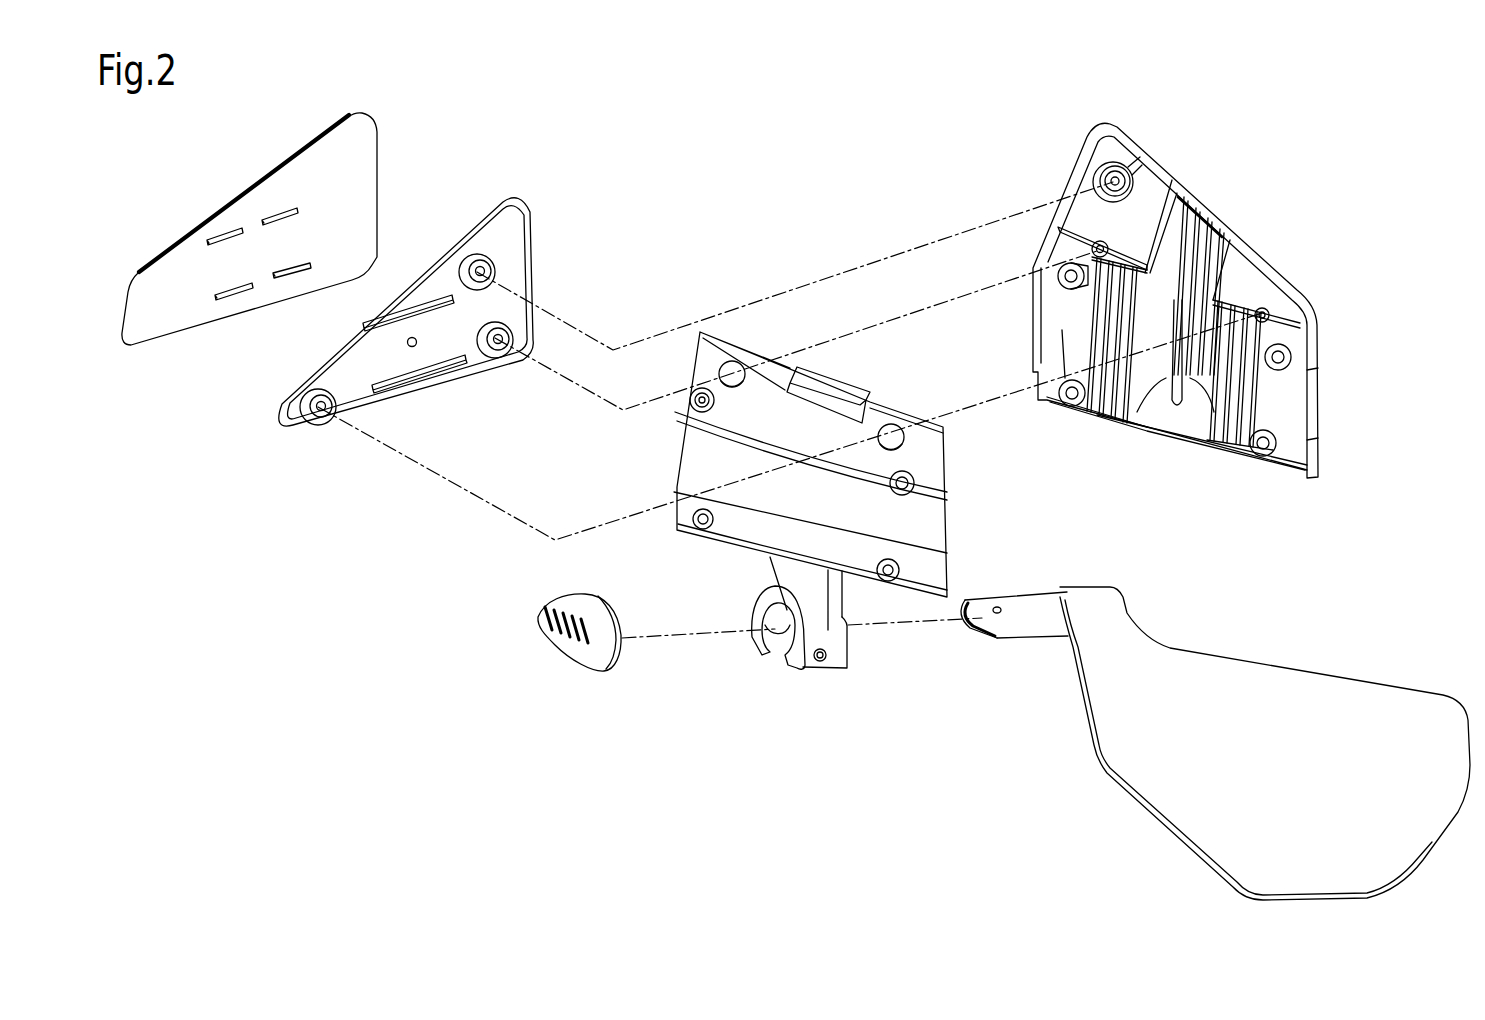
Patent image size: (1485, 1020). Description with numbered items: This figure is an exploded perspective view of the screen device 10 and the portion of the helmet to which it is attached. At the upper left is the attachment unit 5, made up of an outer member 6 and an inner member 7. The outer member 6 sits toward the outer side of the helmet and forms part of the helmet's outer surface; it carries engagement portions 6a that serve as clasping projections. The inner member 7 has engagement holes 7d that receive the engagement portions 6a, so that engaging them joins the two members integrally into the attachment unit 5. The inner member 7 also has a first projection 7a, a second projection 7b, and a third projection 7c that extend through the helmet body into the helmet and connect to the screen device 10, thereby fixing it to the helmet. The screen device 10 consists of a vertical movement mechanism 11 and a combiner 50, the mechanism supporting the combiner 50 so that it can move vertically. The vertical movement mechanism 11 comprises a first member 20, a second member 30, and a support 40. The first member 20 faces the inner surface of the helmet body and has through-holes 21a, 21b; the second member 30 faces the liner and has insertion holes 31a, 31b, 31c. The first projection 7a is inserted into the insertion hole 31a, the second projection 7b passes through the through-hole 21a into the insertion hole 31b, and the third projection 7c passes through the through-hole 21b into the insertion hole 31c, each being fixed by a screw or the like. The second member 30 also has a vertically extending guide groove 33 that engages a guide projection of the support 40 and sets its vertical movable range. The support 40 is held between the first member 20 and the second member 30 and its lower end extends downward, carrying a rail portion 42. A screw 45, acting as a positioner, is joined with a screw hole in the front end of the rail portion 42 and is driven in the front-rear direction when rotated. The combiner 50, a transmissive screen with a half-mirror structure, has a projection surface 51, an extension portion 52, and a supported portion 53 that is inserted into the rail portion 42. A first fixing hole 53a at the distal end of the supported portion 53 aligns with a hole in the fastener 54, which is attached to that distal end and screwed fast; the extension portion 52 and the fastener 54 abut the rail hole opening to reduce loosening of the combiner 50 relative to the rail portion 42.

The attachment unit 5 is at (403, 100).
The outer member 6 is at (366, 167).
The engagement portions 6a is at (225, 232).
The inner member 7 is at (490, 207).
The first projection 7a is at (484, 275).
The second projection 7b is at (505, 343).
The third projection 7c is at (323, 413).
The engagement holes 7d is at (433, 303).
The screen device 10 is at (1265, 138).
The vertical movement mechanism 11 is at (952, 468).
The first member 20 is at (672, 498).
The through-hole 21a is at (737, 378).
The through-hole 21b is at (893, 433).
The second member 30 is at (1079, 132).
The insertion hole 31a is at (1113, 177).
The insertion hole 31b is at (1100, 247).
The insertion hole 31c is at (1262, 308).
The guide groove 33 is at (1208, 250).
The support 40 is at (787, 573).
The rail portion 42 is at (802, 675).
The screw 45 is at (821, 661).
The combiner 50 is at (1294, 665).
The projection surface 51 is at (1160, 793).
The extension portion 52 is at (1093, 593).
The supported portion 53 is at (1032, 628).
The first fixing hole 53a is at (998, 608).
The fastener 54 is at (588, 660).